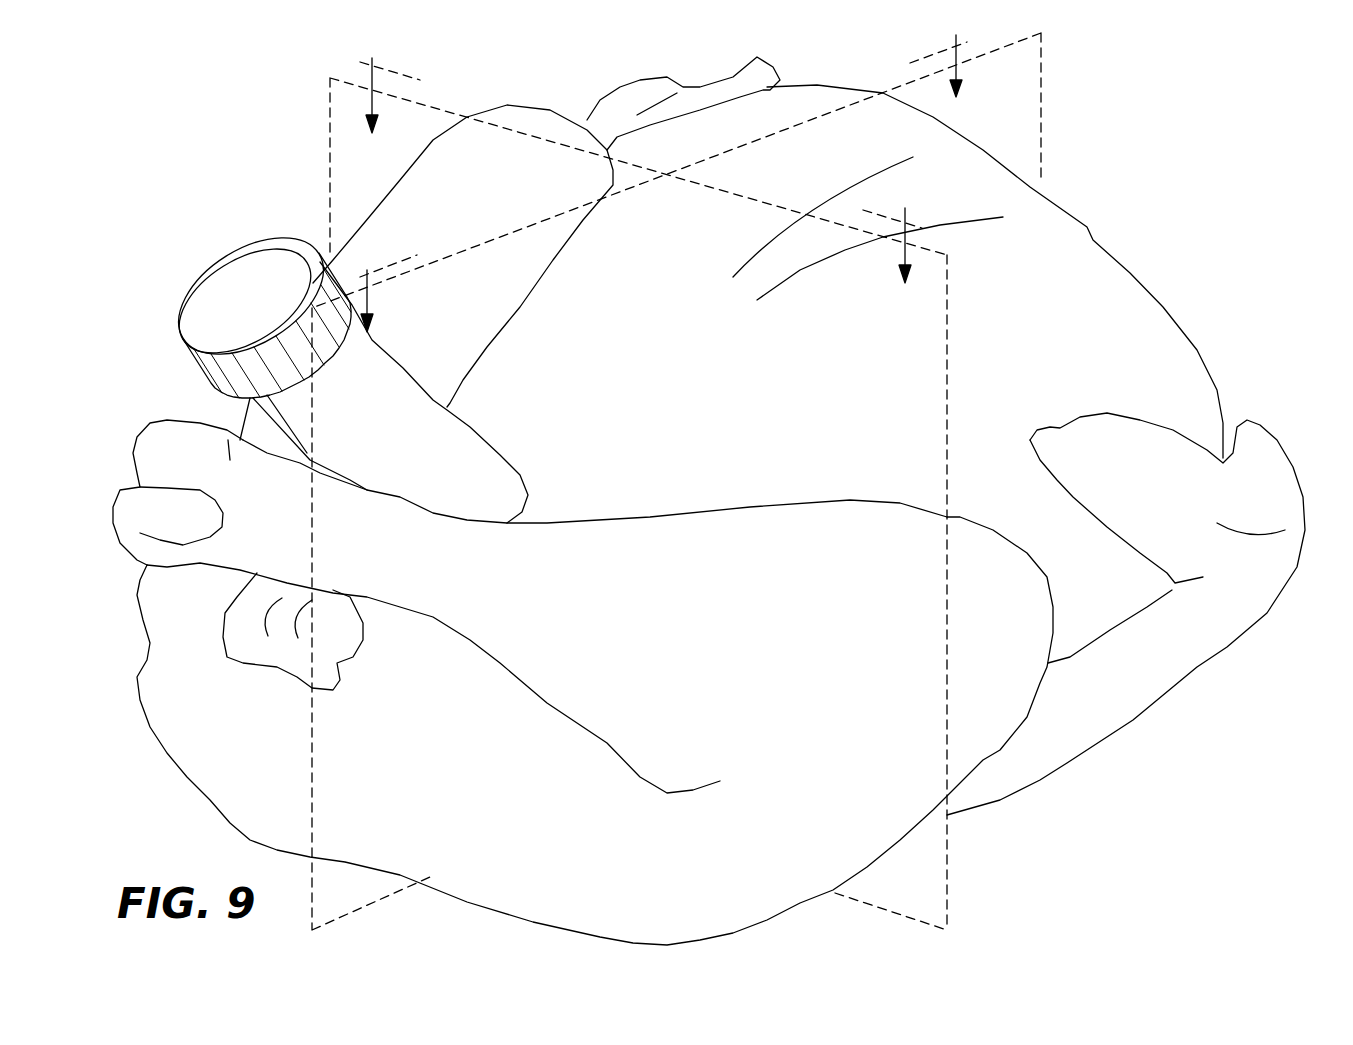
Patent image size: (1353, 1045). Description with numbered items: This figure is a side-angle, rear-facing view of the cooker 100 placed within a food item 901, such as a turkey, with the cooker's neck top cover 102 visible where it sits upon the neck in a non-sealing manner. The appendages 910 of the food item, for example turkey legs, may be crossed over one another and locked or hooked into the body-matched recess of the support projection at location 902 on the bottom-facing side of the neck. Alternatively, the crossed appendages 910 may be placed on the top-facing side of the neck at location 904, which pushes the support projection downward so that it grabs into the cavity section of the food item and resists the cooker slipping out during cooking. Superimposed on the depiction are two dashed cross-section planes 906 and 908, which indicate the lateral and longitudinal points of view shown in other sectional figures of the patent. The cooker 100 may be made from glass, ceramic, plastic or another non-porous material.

The cooker 100 is at (358, 367).
The neck top cover 102 is at (273, 377).
The food item 901 is at (1040, 772).
The location 902 is at (330, 575).
The location 904 is at (509, 434).
The cross-section 906 is at (972, 58).
The cross-section 908 is at (947, 573).
The appendages 910 is at (207, 480).